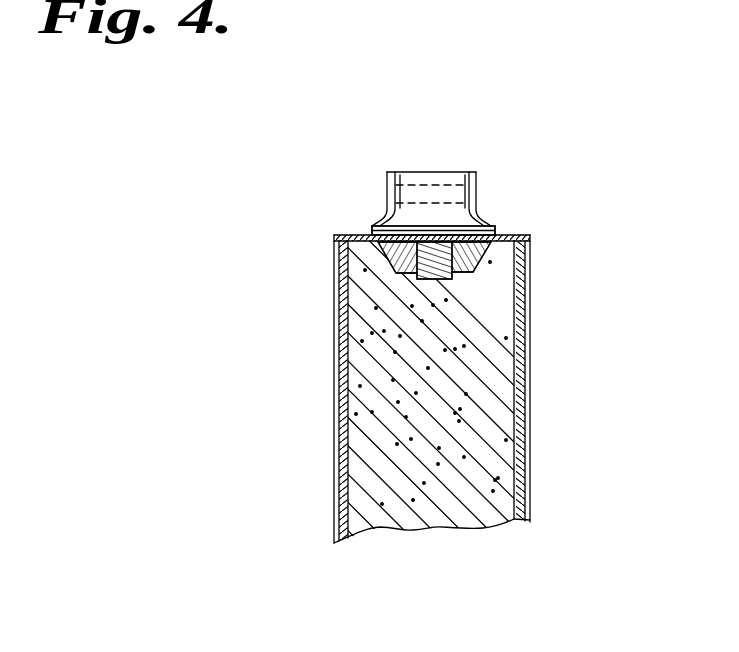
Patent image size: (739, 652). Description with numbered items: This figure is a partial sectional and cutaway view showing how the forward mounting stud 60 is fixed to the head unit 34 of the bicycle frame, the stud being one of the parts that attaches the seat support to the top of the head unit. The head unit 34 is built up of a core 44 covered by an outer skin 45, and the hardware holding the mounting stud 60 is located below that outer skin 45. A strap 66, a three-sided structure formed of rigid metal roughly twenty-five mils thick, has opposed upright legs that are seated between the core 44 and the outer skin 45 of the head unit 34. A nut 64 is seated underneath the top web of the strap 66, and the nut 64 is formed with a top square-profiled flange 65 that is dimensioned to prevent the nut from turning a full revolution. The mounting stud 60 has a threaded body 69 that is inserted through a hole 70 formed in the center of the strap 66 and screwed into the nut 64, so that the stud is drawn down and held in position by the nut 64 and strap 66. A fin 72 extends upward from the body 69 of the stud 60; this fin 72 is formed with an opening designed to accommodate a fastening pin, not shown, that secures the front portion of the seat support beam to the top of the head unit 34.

The head unit 34 is at (531, 484).
The core 44 is at (455, 503).
The outer skin 45 is at (531, 247).
The mounting stud 60 is at (478, 208).
The nut 64 is at (531, 300).
The top square-profiled flange 65 is at (388, 248).
The strap 66 is at (532, 372).
The threaded body 69 is at (416, 262).
The hole 70 is at (395, 227).
The fin 72 is at (448, 191).